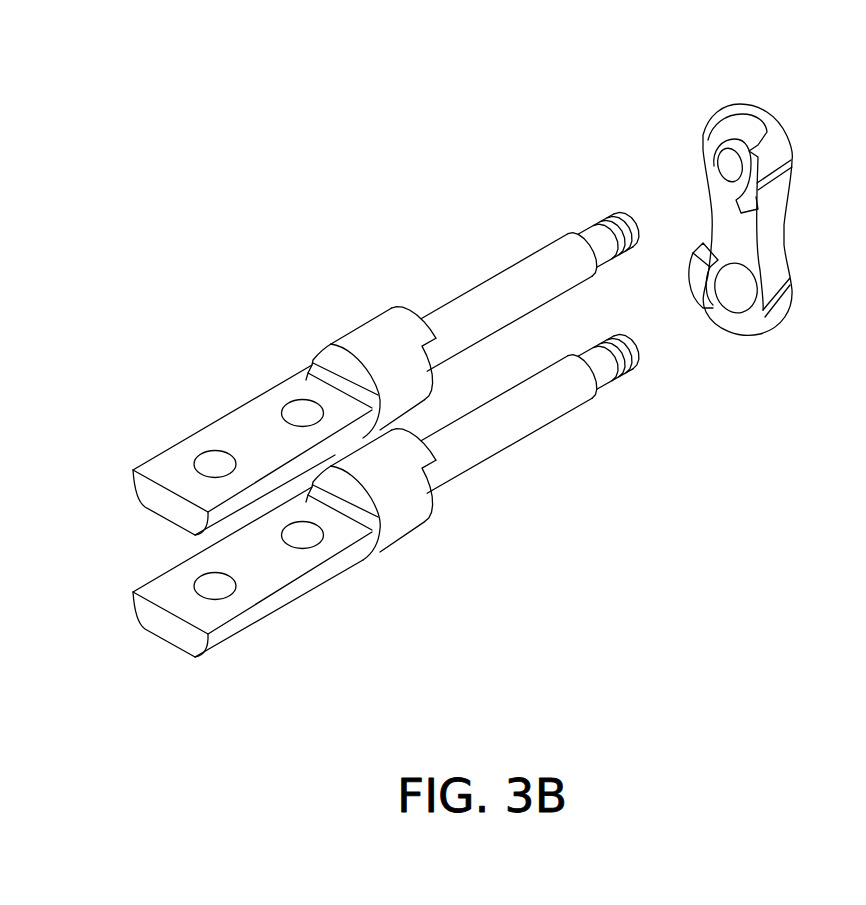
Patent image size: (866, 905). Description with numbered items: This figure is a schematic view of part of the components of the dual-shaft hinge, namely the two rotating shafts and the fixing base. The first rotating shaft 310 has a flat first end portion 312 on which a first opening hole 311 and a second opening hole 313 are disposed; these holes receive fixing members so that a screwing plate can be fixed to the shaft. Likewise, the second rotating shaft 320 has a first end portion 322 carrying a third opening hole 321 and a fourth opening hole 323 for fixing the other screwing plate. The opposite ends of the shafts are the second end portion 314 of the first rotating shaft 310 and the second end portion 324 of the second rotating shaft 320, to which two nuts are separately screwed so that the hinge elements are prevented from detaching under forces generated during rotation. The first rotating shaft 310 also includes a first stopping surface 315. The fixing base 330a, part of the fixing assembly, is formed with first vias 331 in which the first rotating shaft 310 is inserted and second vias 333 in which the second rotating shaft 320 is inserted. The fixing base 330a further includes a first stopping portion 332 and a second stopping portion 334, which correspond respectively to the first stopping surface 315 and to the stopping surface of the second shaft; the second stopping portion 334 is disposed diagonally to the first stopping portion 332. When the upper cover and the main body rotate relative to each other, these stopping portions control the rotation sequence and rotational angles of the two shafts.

The first rotating shaft 310 is at (538, 203).
The first opening hole 311 is at (207, 461).
The first end portion 312 is at (158, 485).
The second opening hole 313 is at (293, 405).
The second end portion 314 is at (606, 214).
The first stopping surface 315 is at (432, 346).
The second rotating shaft 320 is at (577, 440).
The third opening hole 321 is at (260, 618).
The first end portion 322 is at (158, 485).
The fourth opening hole 323 is at (349, 565).
The second end portion 324 is at (616, 397).
The fixing base 330a is at (737, 113).
The first via 331 is at (722, 158).
The first stopping portion 332 is at (749, 144).
The second via 333 is at (738, 292).
The second stopping portion 334 is at (710, 253).